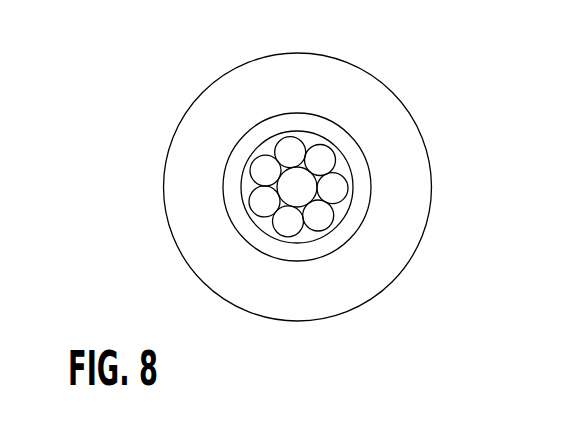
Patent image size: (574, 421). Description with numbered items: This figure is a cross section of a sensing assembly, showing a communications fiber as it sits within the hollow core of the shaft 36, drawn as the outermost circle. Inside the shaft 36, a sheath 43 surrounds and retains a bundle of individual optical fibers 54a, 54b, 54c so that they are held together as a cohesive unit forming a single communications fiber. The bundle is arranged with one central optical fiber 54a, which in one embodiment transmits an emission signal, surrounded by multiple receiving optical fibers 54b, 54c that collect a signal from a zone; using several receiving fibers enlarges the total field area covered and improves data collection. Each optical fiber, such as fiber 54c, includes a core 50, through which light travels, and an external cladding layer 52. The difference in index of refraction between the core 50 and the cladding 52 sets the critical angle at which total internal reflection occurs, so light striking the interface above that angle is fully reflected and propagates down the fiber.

The shaft 36 is at (230, 72).
The sheath 43 is at (222, 183).
The core 50 is at (290, 222).
The cladding layer 52 is at (287, 228).
The optical fiber 54a is at (308, 188).
The optical fiber 54b is at (304, 143).
The optical fiber 54c is at (299, 221).